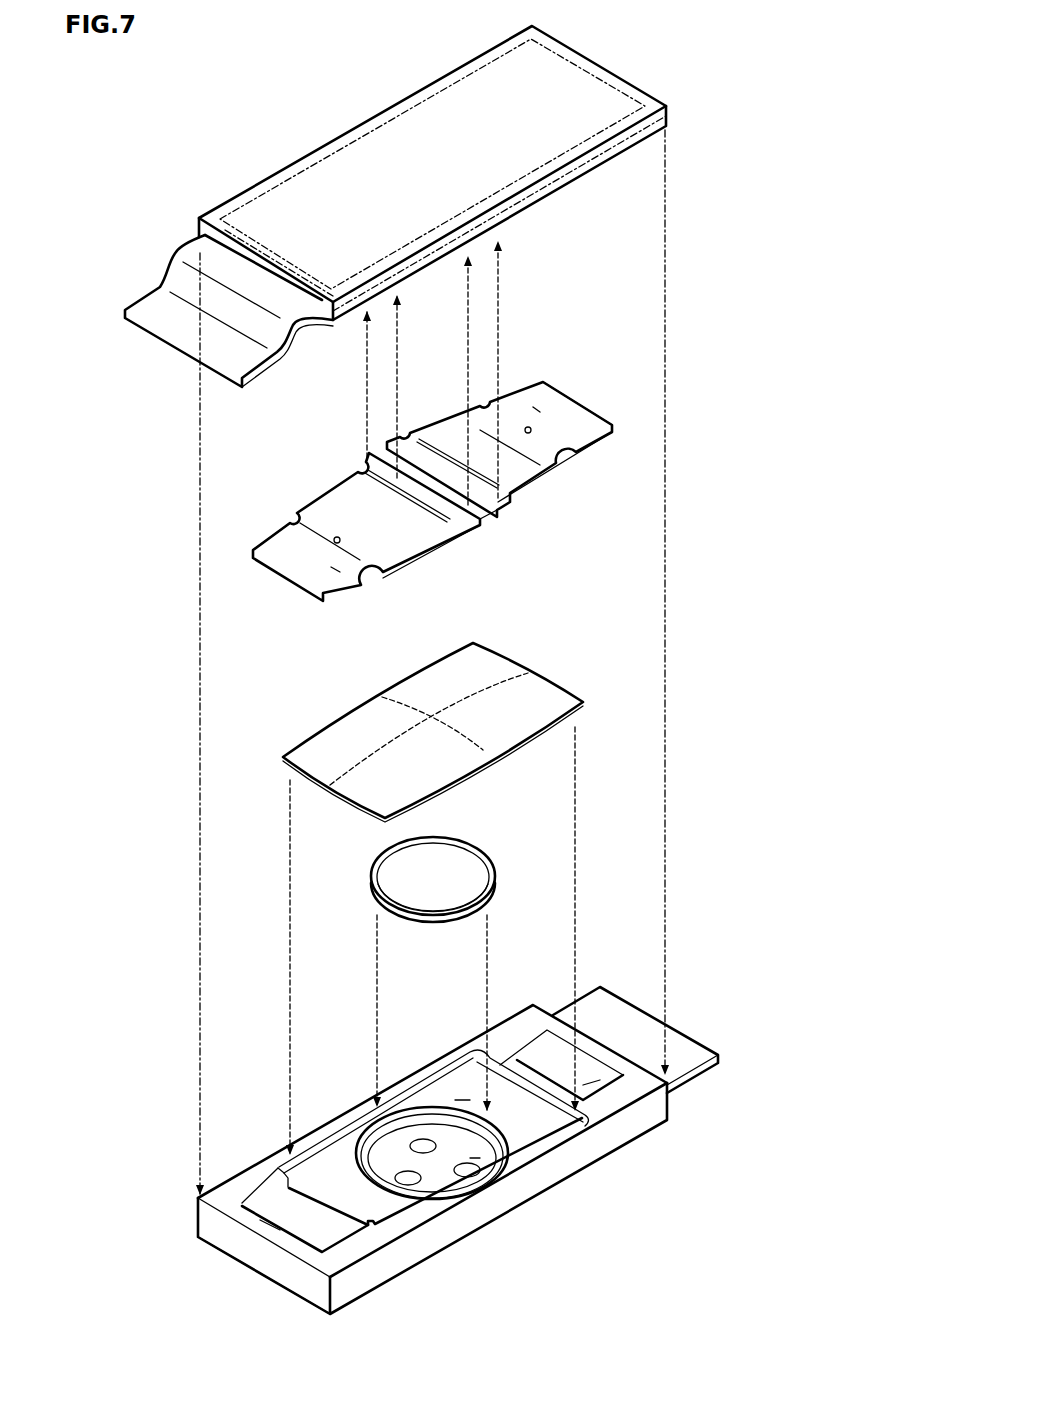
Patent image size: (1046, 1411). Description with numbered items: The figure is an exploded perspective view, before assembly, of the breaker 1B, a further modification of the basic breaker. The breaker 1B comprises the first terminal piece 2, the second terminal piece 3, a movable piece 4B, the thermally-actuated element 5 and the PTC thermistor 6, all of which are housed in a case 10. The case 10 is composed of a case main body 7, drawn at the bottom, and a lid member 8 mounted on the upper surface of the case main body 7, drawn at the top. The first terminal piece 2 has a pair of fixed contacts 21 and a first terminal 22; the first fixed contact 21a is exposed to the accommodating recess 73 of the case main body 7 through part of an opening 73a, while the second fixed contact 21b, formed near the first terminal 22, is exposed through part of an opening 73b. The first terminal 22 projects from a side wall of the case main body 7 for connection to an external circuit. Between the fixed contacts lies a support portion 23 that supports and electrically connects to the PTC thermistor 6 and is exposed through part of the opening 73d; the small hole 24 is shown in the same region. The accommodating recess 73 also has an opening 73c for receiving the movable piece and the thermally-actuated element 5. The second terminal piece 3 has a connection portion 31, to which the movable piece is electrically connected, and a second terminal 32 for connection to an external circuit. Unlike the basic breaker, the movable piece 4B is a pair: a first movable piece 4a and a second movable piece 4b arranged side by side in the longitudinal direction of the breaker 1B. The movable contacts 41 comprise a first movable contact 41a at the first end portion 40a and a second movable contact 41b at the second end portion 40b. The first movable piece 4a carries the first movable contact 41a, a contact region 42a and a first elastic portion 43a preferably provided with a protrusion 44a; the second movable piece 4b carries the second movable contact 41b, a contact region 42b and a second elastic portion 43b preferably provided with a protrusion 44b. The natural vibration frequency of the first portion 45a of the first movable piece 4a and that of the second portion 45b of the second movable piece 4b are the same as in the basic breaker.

The breaker 1B is at (752, 82).
The first terminal piece 2 is at (637, 1028).
The second terminal piece 3 is at (178, 241).
The first movable piece 4a is at (389, 541).
The second movable piece 4b is at (511, 470).
The movable piece 4B is at (496, 526).
The thermally-actuated element 5 is at (527, 702).
The PTC thermistor 6 is at (450, 866).
The case main body 7 is at (404, 1259).
The lid member 8 is at (362, 120).
The case 10 is at (638, 161).
The fixed contacts 21 is at (313, 1229).
The first fixed contact 21a is at (293, 1227).
The second fixed contact 21b is at (543, 1040).
The first terminal 22 is at (684, 1052).
The support portion 23 is at (399, 1156).
The hole 24 is at (471, 1172).
The connection portion 31 is at (423, 180).
The second terminal 32 is at (176, 318).
The first end portion 40a is at (294, 556).
The second end portion 40b is at (575, 427).
The movable contacts 41 is at (255, 560).
The first movable contact 41a is at (300, 595).
The second movable contact 41b is at (614, 433).
The contact region 42a is at (441, 505).
The contact region 42b is at (430, 462).
The first elastic portion 43a is at (373, 500).
The second elastic portion 43b is at (507, 432).
The protrusion 44a is at (335, 537).
The protrusion 44b is at (530, 428).
The first portion 45a is at (334, 569).
The second portion 45b is at (535, 404).
The accommodating recess 73 is at (526, 1127).
The opening 73a is at (272, 1212).
The opening 73b is at (591, 1075).
The opening 73c is at (462, 1095).
The opening 73d is at (472, 1155).